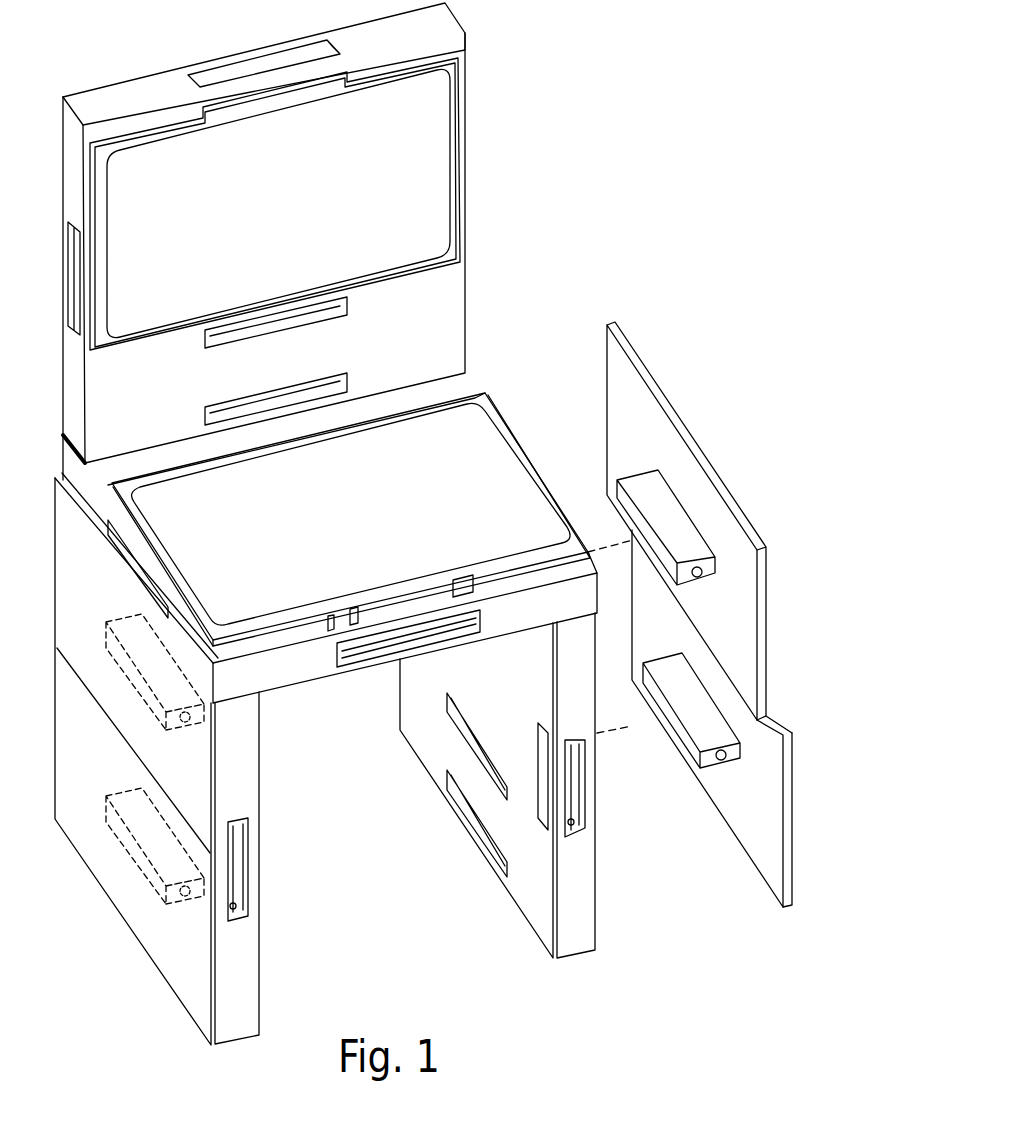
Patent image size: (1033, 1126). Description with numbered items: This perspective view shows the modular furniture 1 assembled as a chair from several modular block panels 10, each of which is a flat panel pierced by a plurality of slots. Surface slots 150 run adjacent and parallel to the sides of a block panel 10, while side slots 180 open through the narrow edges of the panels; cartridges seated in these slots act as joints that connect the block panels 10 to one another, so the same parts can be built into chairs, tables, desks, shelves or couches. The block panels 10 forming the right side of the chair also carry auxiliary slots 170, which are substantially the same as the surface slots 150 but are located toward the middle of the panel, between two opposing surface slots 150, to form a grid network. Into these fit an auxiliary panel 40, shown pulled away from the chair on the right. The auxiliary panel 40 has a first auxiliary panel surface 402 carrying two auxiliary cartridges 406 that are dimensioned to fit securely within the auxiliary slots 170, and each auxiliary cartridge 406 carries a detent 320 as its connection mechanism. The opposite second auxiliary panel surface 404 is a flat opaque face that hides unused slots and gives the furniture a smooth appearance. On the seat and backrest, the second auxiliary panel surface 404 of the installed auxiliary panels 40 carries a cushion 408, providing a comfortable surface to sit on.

The modular furniture 1 is at (637, 80).
The modular block panel 10 is at (445, 308).
The auxiliary panel 40 is at (470, 160).
The surface slot 150 is at (334, 301).
The auxiliary slot 170 is at (457, 726).
The side slot 180 is at (203, 78).
The detent 320 is at (722, 765).
The first auxiliary panel surface 402 is at (625, 372).
The second auxiliary panel surface 404 is at (666, 396).
The auxiliary cartridge 406 is at (683, 532).
The cushion 408 is at (118, 190).